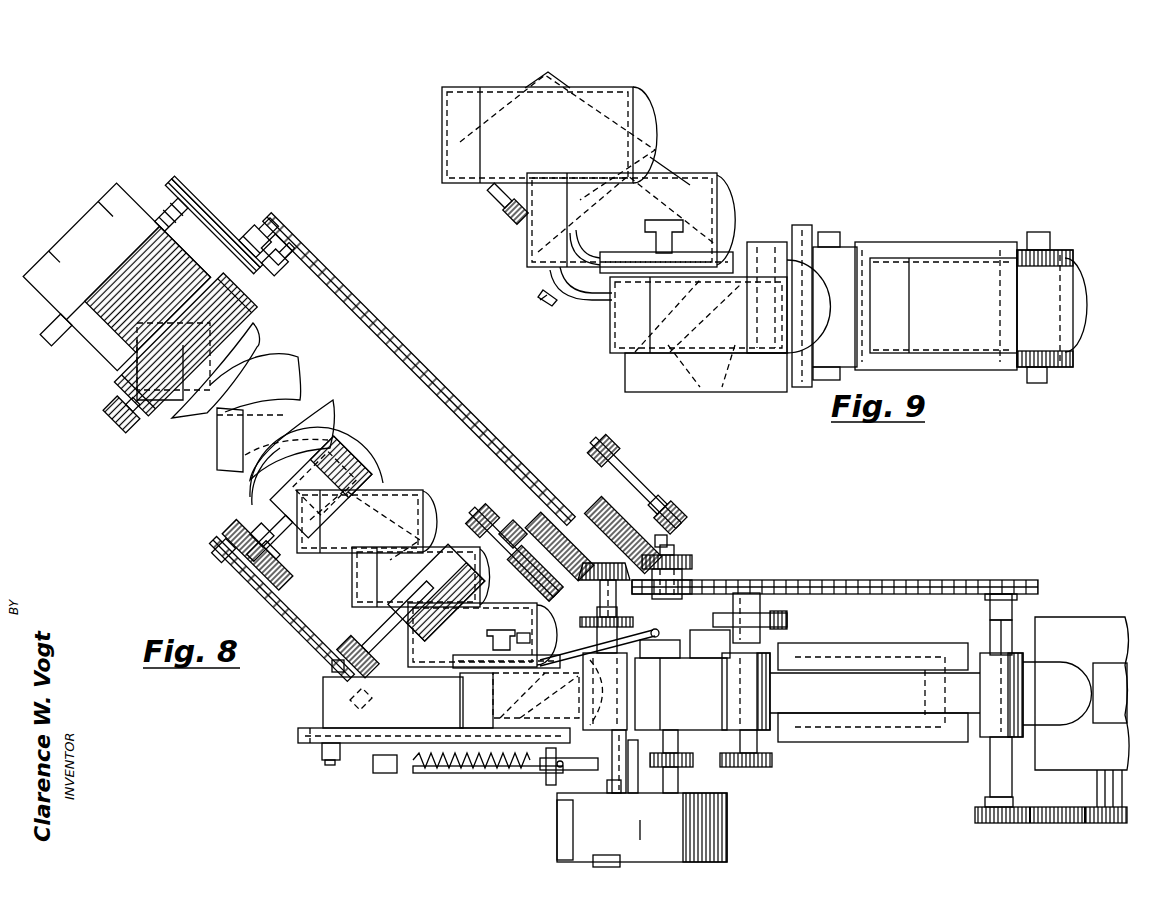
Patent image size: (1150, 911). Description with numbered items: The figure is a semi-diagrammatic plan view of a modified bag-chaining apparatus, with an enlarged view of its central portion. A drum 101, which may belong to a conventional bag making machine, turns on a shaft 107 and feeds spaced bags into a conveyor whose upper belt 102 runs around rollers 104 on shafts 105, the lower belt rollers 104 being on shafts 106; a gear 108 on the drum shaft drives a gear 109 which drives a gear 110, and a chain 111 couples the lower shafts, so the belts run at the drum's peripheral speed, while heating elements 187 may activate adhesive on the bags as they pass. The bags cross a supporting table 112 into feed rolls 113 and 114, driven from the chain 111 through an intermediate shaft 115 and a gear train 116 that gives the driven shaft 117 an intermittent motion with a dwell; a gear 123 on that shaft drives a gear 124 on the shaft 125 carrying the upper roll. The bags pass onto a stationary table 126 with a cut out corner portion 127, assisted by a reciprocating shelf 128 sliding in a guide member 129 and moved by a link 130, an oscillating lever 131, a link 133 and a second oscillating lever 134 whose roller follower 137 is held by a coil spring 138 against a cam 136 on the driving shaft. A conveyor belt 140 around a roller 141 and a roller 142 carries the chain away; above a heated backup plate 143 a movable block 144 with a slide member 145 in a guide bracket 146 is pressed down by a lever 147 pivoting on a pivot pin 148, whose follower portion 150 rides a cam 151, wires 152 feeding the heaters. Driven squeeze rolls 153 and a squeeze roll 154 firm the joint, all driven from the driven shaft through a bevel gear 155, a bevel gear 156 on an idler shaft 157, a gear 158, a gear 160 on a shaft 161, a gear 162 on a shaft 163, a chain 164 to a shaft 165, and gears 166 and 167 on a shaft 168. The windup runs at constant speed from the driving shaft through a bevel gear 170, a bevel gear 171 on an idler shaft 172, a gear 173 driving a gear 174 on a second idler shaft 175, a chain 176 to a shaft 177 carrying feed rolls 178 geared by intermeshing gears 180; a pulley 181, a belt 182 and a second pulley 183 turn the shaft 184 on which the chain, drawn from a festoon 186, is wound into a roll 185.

In FIG. 8, the drum 101 is at (1090, 625).
In FIG. 8, the upper belt 102 is at (1028, 705).
In FIG. 8, the rollers 104 is at (735, 668).
In FIG. 9, the rollers 104 is at (1068, 250).
In FIG. 8, the shafts for upper belt rollers 105 is at (770, 757).
In FIG. 8, the shafts for lower belt rollers 106 is at (992, 605).
In FIG. 9, the shafts for lower belt rollers 106 is at (1030, 235).
In FIG. 8, the drum shaft 107 is at (1097, 785).
In FIG. 8, the gear 108 is at (1085, 822).
In FIG. 8, the gear 109 is at (1035, 825).
In FIG. 8, the gear 110 is at (975, 815).
In FIG. 8, the chain 111 is at (916, 580).
In FIG. 8, the supporting table 112 is at (703, 730).
In FIG. 9, the supporting table 112 is at (950, 240).
In FIG. 8, the upper feed roll 113 is at (632, 688).
In FIG. 9, the lower feed roll 114 is at (845, 253).
In FIG. 8, the intermediate shaft 115 is at (725, 538).
In FIG. 8, the gear train 116 is at (736, 834).
In FIG. 8, the driven shaft 117 is at (598, 612).
In FIG. 9, the driven shaft 117 is at (843, 243).
In FIG. 8, the gear 123 is at (620, 645).
In FIG. 8, the gear 124 is at (545, 630).
In FIG. 8, the shaft 125 is at (650, 760).
In FIG. 8, the stationary table 126 is at (462, 708).
In FIG. 9, the stationary table 126 is at (764, 383).
In FIG. 8, the cut out corner portion 127 is at (550, 705).
In FIG. 9, the cut out corner portion 127 is at (688, 288).
In FIG. 8, the reciprocating shelf 128 is at (322, 699).
In FIG. 8, the guide member 129 is at (310, 740).
In FIG. 8, the link 130 is at (332, 768).
In FIG. 8, the oscillating lever 131 is at (388, 778).
In FIG. 8, the link 133 is at (484, 776).
In FIG. 8, the second oscillating lever 134 is at (560, 782).
In FIG. 8, the cam 136 is at (672, 752).
In FIG. 8, the roller follower 137 is at (638, 770).
In FIG. 8, the coil spring 138 is at (455, 772).
In FIG. 8, the conveyor belt 140 is at (565, 704).
In FIG. 9, the conveyor belt 140 is at (720, 367).
In FIG. 9, the roller 141 is at (687, 377).
In FIG. 8, the roller 142 is at (252, 512).
In FIG. 9, the backup plate 143 is at (590, 303).
In FIG. 8, the movable block 144 is at (478, 670).
In FIG. 9, the movable block 144 is at (707, 253).
In FIG. 8, the slide member 145 is at (493, 636).
In FIG. 9, the slide member 145 is at (663, 222).
In FIG. 8, the guide bracket 146 is at (488, 644).
In FIG. 8, the lever 147 is at (693, 638).
In FIG. 8, the pivot pin 148 is at (715, 600).
In FIG. 8, the follower portion 150 is at (762, 608).
In FIG. 8, the cam 151 is at (790, 622).
In FIG. 8, the wires 152 is at (372, 700).
In FIG. 9, the wires 152 is at (575, 252).
In FIG. 8, the squeeze rolls 153 is at (393, 565).
In FIG. 9, the squeeze rolls 153 is at (490, 197).
In FIG. 8, the squeeze roll 154 is at (338, 450).
In FIG. 8, the bevel gear 155 is at (592, 515).
In FIG. 8, the bevel gear 156 is at (548, 520).
In FIG. 8, the idler shaft 157 is at (556, 581).
In FIG. 8, the gear 158 is at (557, 582).
In FIG. 8, the gear 160 is at (482, 516).
In FIG. 8, the shaft 161 is at (507, 521).
In FIG. 9, the shaft 161 is at (498, 228).
In FIG. 8, the gear 162 is at (350, 645).
In FIG. 8, the shaft 163 is at (395, 625).
In FIG. 8, the chain 164 is at (262, 602).
In FIG. 8, the shaft 165 is at (222, 556).
In FIG. 8, the gear 166 is at (282, 575).
In FIG. 8, the gear 167 is at (276, 562).
In FIG. 8, the shaft 168 is at (270, 497).
In FIG. 8, the bevel gear 170 is at (692, 561).
In FIG. 8, the bevel gear 171 is at (667, 541).
In FIG. 8, the idler shaft 172 is at (666, 521).
In FIG. 8, the gear 173 is at (676, 506).
In FIG. 8, the gear 174 is at (600, 446).
In FIG. 8, the second idler shaft 175 is at (600, 490).
In FIG. 8, the chain 176 is at (434, 372).
In FIG. 8, the shaft 177 is at (278, 272).
In FIG. 8, the feed rolls 178 is at (256, 306).
In FIG. 8, the intermeshing gears 180 is at (100, 410).
In FIG. 8, the pulley 181 is at (245, 255).
In FIG. 8, the belt 182 is at (215, 225).
In FIG. 8, the second pulley 183 is at (177, 190).
In FIG. 8, the shaft 184 is at (167, 217).
In FIG. 8, the roll 185 is at (48, 262).
In FIG. 8, the festoon 186 is at (225, 448).
In FIG. 8, the heating elements 187 is at (900, 735).